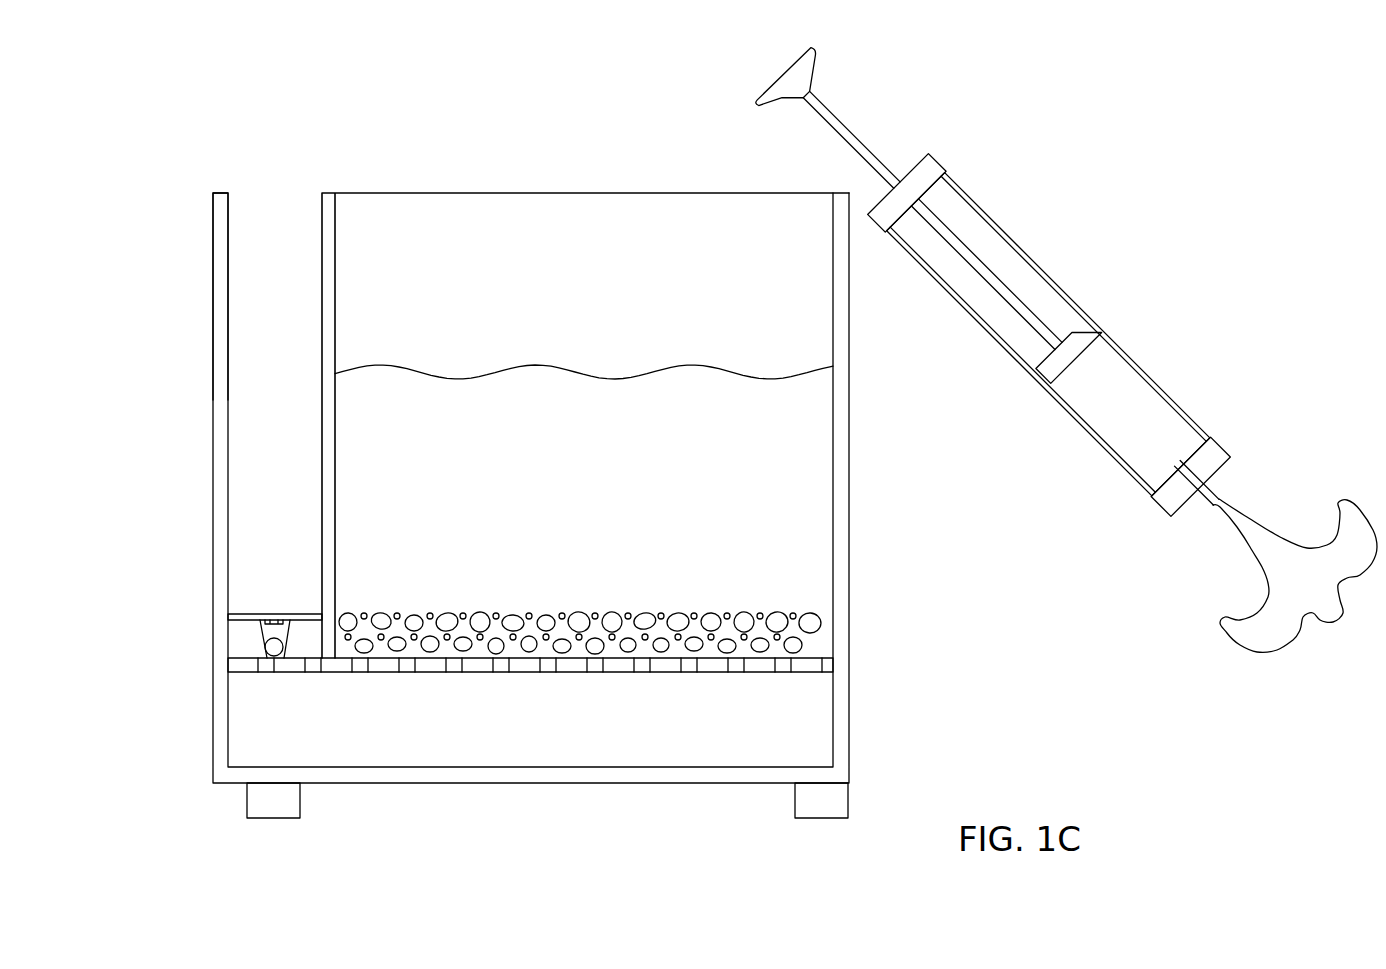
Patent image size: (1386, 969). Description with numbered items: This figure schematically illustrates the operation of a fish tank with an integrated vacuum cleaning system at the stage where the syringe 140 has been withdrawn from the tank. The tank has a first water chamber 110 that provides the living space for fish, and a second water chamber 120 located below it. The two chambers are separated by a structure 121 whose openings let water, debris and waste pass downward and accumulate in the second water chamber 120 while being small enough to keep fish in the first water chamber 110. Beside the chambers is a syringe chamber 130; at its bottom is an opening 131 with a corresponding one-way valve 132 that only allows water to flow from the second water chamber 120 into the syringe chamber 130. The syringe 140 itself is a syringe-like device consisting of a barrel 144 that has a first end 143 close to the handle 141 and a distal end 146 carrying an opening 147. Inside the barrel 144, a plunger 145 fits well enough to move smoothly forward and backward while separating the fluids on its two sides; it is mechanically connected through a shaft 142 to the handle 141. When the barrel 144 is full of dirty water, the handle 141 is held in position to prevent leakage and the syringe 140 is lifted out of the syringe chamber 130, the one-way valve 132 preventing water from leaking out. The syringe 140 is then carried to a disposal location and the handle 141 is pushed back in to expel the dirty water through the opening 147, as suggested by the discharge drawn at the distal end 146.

The first water chamber 110 is at (805, 342).
The second water chamber 120 is at (807, 742).
The structure separating the first and second water chambers 121 is at (825, 665).
The syringe chamber 130 is at (248, 252).
The opening 131 is at (280, 617).
The one-way valve 132 is at (272, 648).
The syringe 140 is at (1098, 127).
The handle 141 is at (783, 82).
The shaft 142 is at (855, 137).
The first end 143 is at (927, 172).
The barrel 144 is at (1065, 277).
The plunger 145 is at (1098, 333).
The distal end 146 is at (1212, 460).
The opening 147 is at (1210, 497).